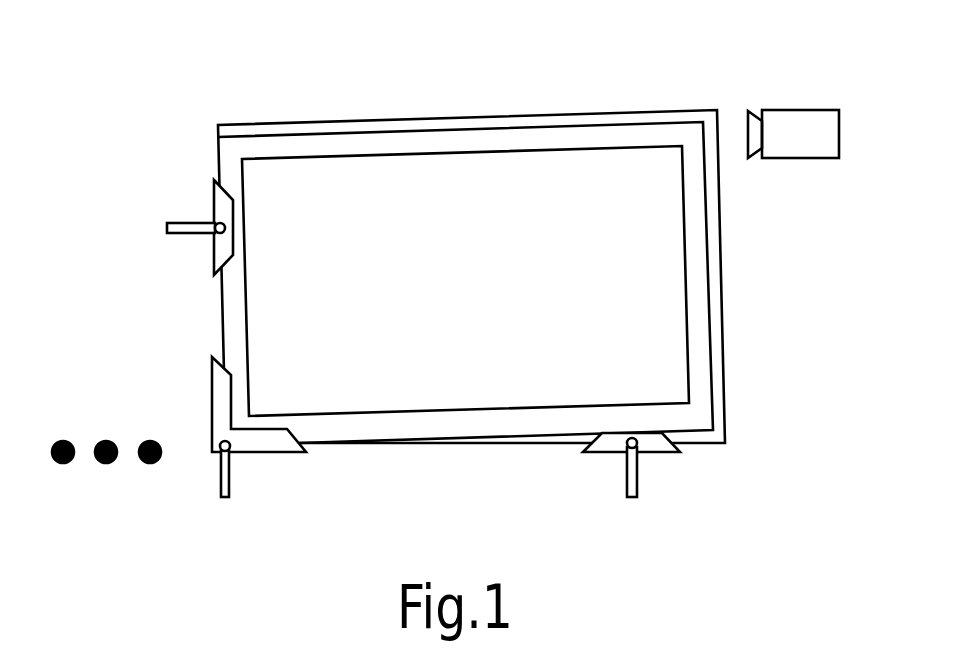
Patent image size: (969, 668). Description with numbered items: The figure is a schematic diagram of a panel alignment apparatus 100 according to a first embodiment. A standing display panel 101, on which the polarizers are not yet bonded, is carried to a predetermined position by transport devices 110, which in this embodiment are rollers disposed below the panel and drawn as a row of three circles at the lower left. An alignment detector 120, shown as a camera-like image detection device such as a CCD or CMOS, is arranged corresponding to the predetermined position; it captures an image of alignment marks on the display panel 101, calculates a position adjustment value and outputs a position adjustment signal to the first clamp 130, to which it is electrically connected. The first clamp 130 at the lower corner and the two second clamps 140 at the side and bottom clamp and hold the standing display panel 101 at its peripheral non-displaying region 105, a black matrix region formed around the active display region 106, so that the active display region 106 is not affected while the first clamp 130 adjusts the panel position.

The panel alignment apparatus 100 is at (513, 230).
The display panel 101 is at (723, 318).
The peripheral non-displaying region 105 is at (692, 287).
The active display region 106 is at (425, 168).
The transport devices 110 is at (153, 463).
The alignment detector 120 is at (768, 110).
The first clamp 130 is at (275, 443).
The second clamps 140 is at (214, 203).